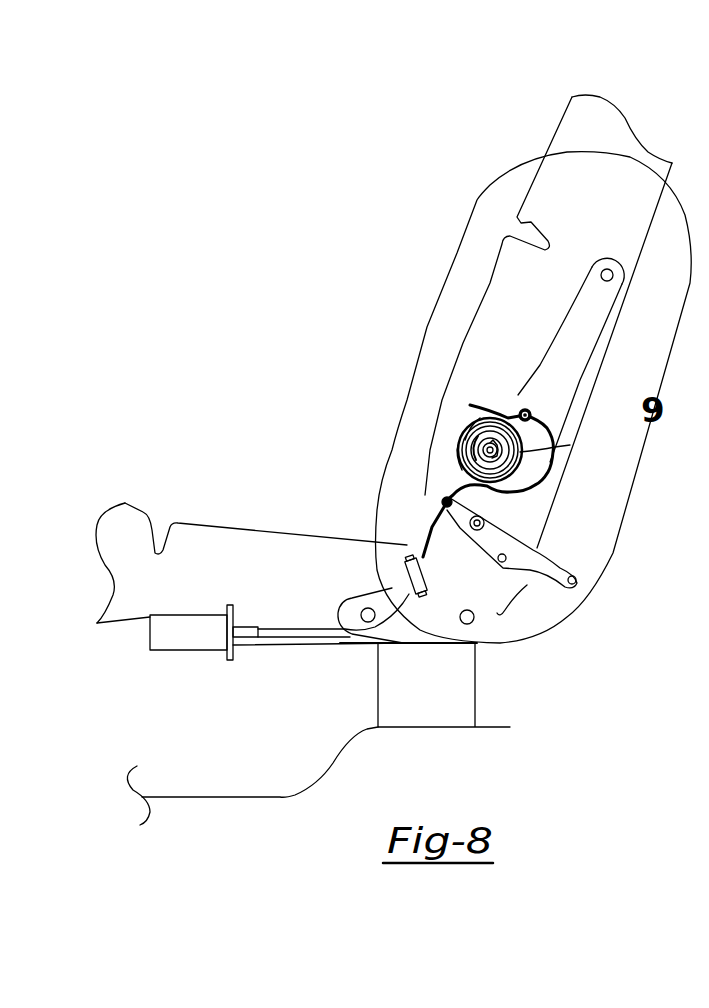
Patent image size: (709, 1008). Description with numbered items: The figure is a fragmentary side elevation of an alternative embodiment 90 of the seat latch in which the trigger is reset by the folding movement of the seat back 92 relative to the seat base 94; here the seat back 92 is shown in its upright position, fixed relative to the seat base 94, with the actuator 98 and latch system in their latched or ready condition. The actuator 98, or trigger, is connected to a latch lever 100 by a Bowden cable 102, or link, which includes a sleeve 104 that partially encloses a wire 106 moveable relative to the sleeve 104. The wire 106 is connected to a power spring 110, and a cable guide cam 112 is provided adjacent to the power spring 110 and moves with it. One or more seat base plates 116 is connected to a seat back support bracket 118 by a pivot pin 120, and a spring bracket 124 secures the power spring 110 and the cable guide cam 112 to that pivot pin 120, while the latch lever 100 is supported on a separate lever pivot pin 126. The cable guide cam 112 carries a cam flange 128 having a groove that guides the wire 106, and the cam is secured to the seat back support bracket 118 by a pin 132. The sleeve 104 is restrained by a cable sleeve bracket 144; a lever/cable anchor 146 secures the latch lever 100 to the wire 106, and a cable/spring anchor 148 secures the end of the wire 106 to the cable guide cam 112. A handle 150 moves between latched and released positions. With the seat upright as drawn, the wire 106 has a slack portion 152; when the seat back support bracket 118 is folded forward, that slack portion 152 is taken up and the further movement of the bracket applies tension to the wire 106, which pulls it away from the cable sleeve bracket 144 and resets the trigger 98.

The alternative embodiment 90 is at (297, 459).
The seat back 92 is at (568, 130).
The seat base 94 is at (203, 526).
The actuator 98 is at (190, 643).
The latch lever 100 is at (535, 552).
The Bowden cable 102 is at (298, 608).
The sleeve 104 is at (392, 620).
The wire 106 is at (440, 535).
The power spring 110 is at (463, 420).
The cable guide cam 112 is at (505, 415).
The seat base plate 116 is at (500, 614).
The seat back support bracket 118 is at (597, 328).
The pivot pin 120 is at (458, 442).
The spring bracket 124 is at (520, 452).
The lever pivot pin 126 is at (485, 521).
The cam flange 128 is at (463, 470).
The pivot bolt 132 is at (528, 410).
The cable sleeve bracket 144 is at (418, 580).
The lever/cable anchor 146 is at (442, 503).
The cable/spring anchor 148 is at (508, 416).
The handle 150 is at (578, 579).
The slack portion 152 is at (548, 475).